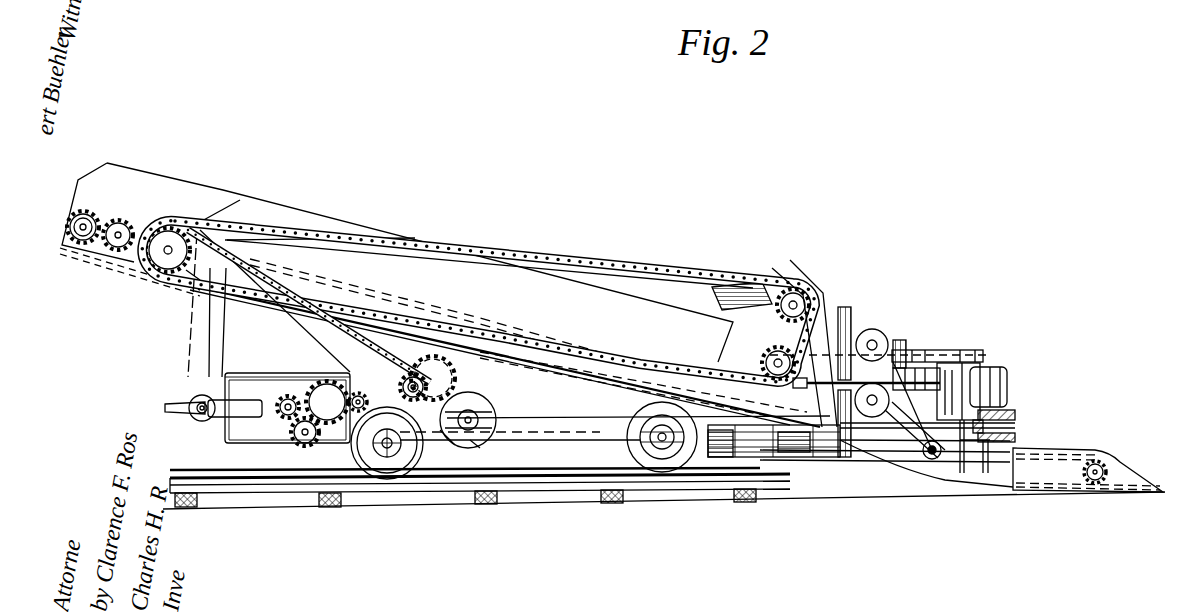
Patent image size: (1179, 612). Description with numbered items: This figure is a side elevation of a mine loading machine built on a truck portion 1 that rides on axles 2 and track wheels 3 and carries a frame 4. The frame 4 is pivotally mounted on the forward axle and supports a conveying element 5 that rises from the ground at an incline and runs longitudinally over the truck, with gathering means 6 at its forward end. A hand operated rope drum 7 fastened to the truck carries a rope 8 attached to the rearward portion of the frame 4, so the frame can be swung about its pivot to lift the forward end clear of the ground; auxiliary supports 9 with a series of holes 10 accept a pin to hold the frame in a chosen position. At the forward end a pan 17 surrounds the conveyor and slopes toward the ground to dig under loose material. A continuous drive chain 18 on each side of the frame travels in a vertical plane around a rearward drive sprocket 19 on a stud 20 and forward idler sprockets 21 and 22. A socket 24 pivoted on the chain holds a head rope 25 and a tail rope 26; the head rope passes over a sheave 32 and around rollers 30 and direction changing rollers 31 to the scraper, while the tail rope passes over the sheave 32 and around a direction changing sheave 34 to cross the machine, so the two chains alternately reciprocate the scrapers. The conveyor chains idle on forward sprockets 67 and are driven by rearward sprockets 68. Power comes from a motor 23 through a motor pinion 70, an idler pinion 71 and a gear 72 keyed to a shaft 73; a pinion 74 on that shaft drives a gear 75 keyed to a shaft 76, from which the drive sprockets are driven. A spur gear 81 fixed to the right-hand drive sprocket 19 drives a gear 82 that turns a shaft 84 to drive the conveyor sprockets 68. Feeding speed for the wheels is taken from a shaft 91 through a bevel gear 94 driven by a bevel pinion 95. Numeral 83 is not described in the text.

The truck portion 1 is at (558, 440).
The axles 2 is at (393, 472).
The wheels 3 is at (420, 484).
The frame 4 is at (722, 306).
The conveying element 5 is at (345, 252).
The gathering means 6 is at (1024, 441).
The hand operated rope drum 7 is at (198, 422).
The rope 8 is at (194, 335).
The auxiliary supports 9 is at (226, 350).
The holes 10 is at (270, 278).
The pan 17 is at (1122, 468).
The continuous drive chain 18 is at (522, 255).
The sprocket 19 is at (205, 222).
The studs 20 is at (160, 272).
The sprocket 21 is at (785, 268).
The sprocket 22 is at (848, 325).
The motor 23 is at (276, 374).
The socket 24 is at (795, 385).
The head rope 25 is at (900, 355).
The tail rope 26 is at (893, 418).
The rollers 30 is at (935, 352).
The direction changing rollers 31 is at (998, 360).
The sheaves 32 is at (870, 417).
The direction changing sheaves 34 is at (935, 462).
The sprockets 67 is at (1110, 480).
The sprockets 68 is at (135, 222).
The motor pinion 70 is at (292, 397).
The idler pinion 71 is at (300, 446).
The gear 72 is at (330, 428).
The shaft 73 is at (346, 362).
The pinion 74 is at (378, 478).
The gear 75 is at (455, 388).
The shaft 76 is at (440, 372).
The spur gear 81 is at (188, 286).
The gear 82 is at (126, 252).
The shaft 83 is at (104, 250).
The shaft 84 is at (78, 243).
The shaft 91 is at (482, 446).
The bevel gear 94 is at (496, 414).
The bevel pinion 95 is at (452, 443).